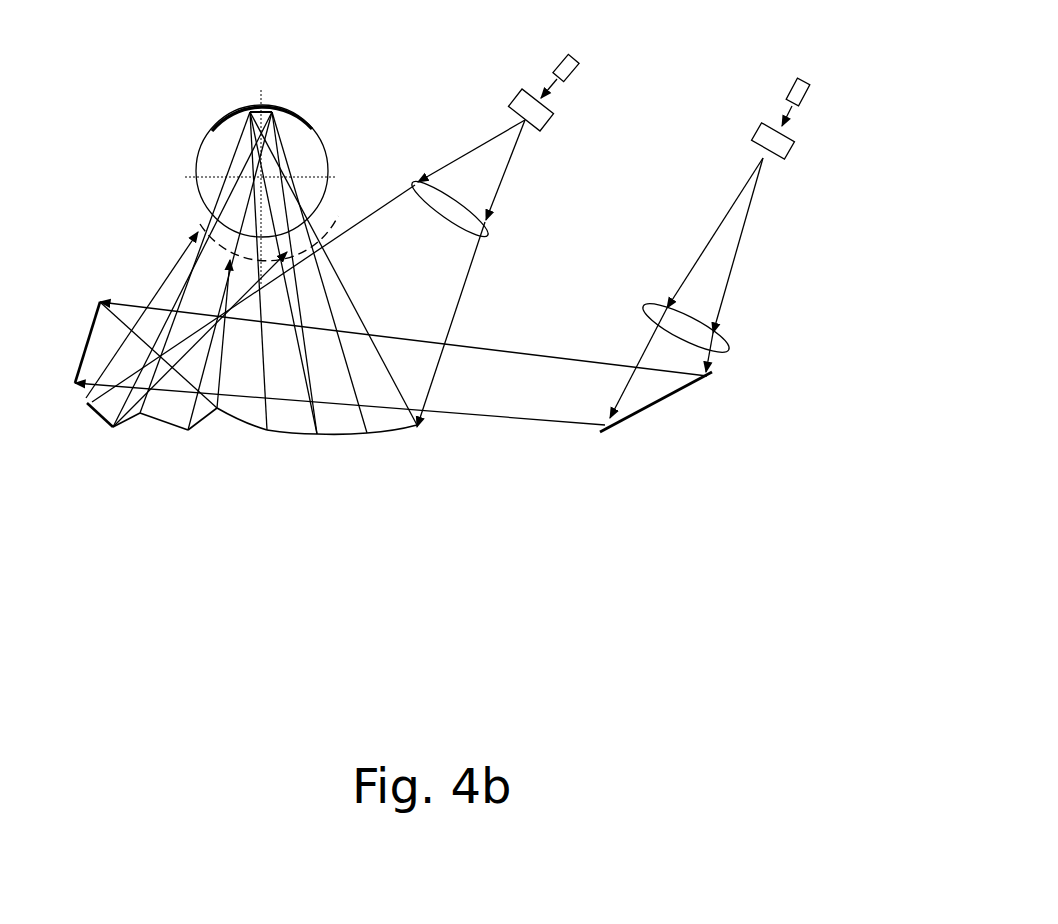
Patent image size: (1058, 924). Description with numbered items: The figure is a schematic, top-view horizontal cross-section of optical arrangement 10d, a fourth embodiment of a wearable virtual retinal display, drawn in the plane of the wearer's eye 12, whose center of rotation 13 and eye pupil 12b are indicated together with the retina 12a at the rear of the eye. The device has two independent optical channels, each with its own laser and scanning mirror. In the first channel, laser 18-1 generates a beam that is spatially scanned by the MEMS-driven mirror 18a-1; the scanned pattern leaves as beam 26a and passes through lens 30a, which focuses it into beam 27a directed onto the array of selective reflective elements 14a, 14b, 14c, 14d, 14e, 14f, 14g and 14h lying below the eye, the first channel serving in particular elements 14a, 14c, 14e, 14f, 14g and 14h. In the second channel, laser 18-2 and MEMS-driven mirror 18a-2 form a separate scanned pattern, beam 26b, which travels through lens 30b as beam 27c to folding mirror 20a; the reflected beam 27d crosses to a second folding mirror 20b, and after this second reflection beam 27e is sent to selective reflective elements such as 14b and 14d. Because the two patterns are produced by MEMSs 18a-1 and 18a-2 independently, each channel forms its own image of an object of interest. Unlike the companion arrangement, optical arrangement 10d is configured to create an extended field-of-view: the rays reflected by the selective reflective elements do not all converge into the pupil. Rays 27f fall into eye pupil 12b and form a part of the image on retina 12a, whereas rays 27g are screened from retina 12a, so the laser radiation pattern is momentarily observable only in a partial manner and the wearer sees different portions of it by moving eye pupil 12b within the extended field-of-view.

The optical arrangement 10d is at (88, 207).
The eye 12 is at (317, 165).
The retina 12a is at (240, 112).
The eye pupil 12b is at (250, 248).
The center of rotation 13 is at (290, 157).
The selective reflective element 14a is at (97, 432).
The selective reflective element 14b is at (124, 430).
The selective reflective element 14c is at (163, 430).
The selective reflective element 14d is at (205, 432).
The selective reflective element 14e is at (247, 432).
The selective reflective element 14f is at (290, 438).
The selective reflective element 14g is at (340, 437).
The selective reflective element 14h is at (393, 435).
The laser 18-1 is at (578, 62).
The laser 18-2 is at (812, 88).
The microelectromechanical system 18a-1 is at (520, 95).
The microelectromechanical system 18a-2 is at (795, 138).
The folding mirror 20a is at (672, 405).
The folding mirror 20b is at (97, 298).
The beam 26a is at (470, 150).
The beam 26b is at (737, 265).
The beam 27a is at (367, 222).
The beam 27c is at (713, 375).
The reflected beam 27d is at (453, 412).
The beam 27e is at (133, 345).
The reflected beam 27f is at (195, 230).
The rays 27g is at (297, 305).
The lens 30a is at (420, 178).
The lens 30b is at (730, 350).